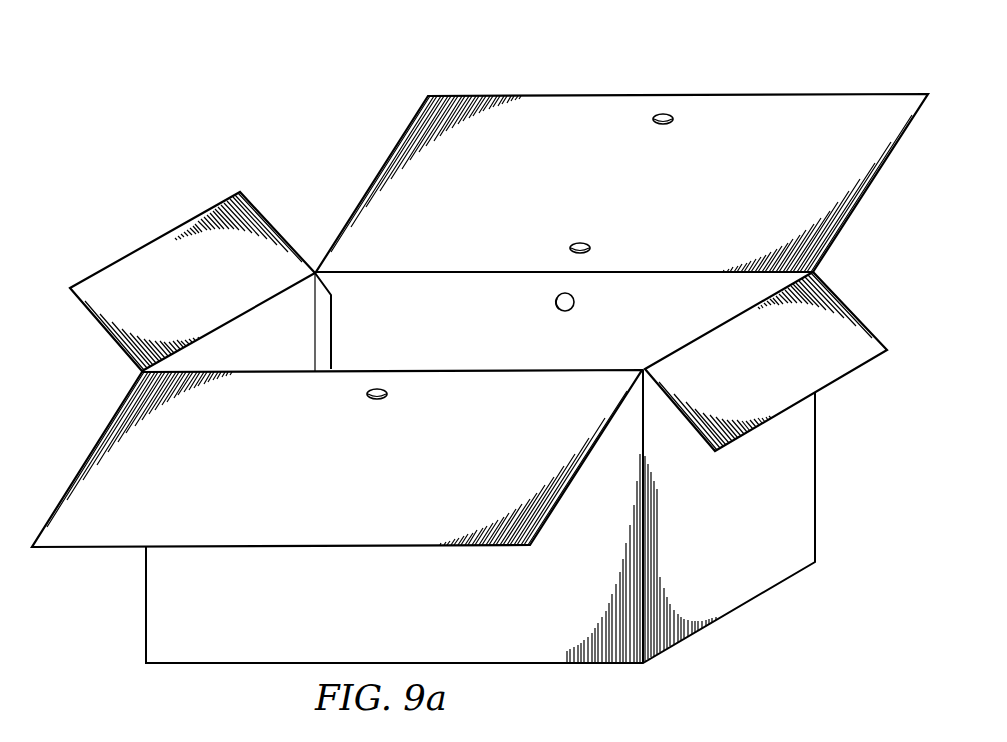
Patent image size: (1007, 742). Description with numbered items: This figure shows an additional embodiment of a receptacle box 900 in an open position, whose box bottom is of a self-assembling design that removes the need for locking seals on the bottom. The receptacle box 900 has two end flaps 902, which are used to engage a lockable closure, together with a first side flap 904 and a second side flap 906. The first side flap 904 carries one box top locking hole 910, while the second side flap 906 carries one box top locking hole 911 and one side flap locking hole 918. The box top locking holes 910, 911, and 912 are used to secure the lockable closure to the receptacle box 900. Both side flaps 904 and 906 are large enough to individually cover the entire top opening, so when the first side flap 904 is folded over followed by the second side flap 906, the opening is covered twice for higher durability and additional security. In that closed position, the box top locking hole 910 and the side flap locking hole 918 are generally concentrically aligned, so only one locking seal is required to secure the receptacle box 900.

The receptacle box 900 is at (272, 109).
The end flaps 902 is at (157, 238).
The first side flap 904 is at (92, 550).
The second side flap 906 is at (673, 93).
The box top locking hole 910 is at (378, 402).
The box top locking hole 911 is at (578, 240).
The box top locking hole 912 is at (577, 300).
The side flap locking hole 918 is at (667, 127).